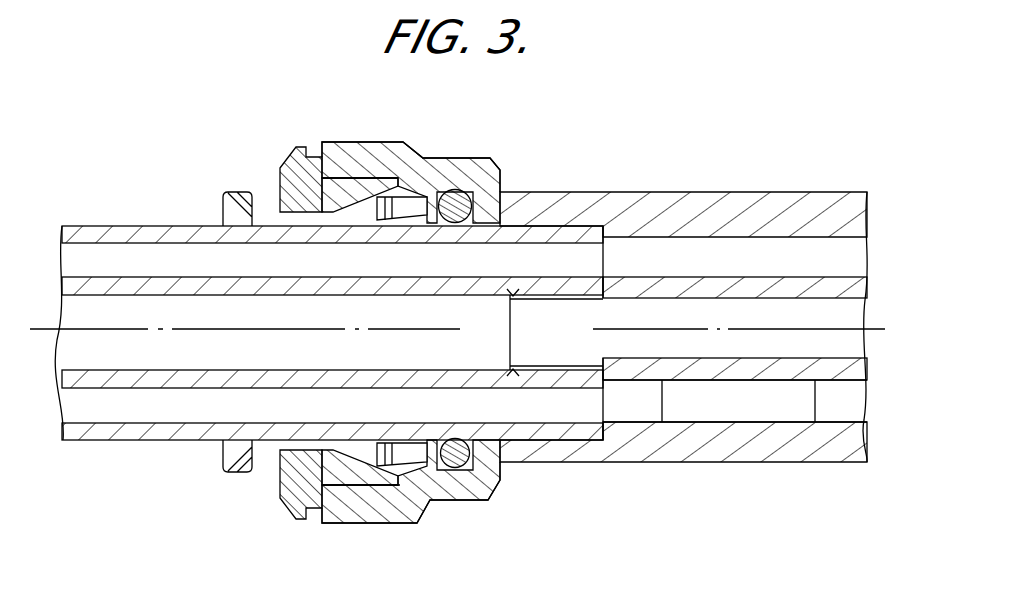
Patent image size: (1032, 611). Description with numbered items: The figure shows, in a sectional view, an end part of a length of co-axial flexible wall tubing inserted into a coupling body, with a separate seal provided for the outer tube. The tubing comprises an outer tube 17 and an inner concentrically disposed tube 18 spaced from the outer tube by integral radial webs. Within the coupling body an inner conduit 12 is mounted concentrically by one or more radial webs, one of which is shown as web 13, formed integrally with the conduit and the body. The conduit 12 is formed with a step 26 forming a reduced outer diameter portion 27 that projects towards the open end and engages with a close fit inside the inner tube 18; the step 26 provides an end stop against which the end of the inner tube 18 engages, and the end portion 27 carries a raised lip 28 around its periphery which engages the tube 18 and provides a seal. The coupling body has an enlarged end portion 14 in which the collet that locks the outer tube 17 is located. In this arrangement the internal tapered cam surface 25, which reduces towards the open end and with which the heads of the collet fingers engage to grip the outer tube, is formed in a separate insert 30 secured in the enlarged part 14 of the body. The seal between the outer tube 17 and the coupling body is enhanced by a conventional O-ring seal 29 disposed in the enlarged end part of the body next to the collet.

The inner conduit 12 is at (820, 287).
The radial web 13 is at (728, 413).
The enlarged end portion 14 is at (378, 150).
The outer tube 17 is at (142, 232).
The inner tube 18 is at (91, 282).
The tapered cam surface 25 is at (351, 204).
The step 26 is at (612, 285).
The reduced outer diameter portion 27 is at (535, 302).
The raised lip 28 is at (508, 297).
The O-ring seal 29 is at (455, 190).
The insert 30 is at (283, 167).